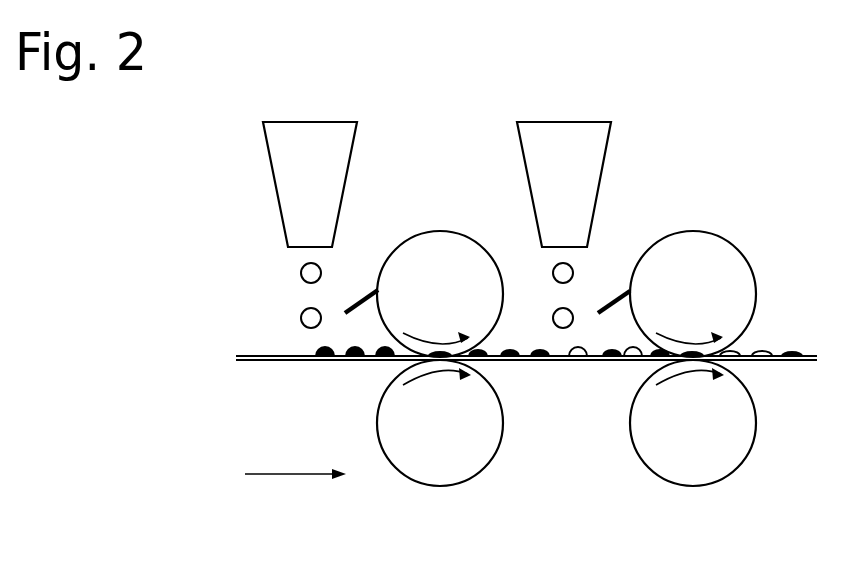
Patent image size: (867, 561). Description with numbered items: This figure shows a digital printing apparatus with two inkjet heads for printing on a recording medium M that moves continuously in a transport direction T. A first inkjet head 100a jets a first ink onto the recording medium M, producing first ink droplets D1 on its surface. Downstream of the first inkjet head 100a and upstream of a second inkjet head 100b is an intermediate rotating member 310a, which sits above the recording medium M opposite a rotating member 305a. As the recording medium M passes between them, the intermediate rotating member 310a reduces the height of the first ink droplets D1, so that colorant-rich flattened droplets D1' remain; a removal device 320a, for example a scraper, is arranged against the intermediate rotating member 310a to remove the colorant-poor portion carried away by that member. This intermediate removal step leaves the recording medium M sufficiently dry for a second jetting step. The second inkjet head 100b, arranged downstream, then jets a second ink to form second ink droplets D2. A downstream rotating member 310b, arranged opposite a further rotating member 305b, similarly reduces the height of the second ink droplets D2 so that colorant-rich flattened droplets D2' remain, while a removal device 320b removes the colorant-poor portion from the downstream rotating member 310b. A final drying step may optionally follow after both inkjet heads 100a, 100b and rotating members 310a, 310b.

The first inkjet head 100a is at (310, 138).
The second inkjet head 100b is at (562, 140).
The intermediate rotating member 310a is at (443, 245).
The downstream rotating member 310b is at (694, 245).
The removal device 320a is at (350, 305).
The removal device 320b is at (605, 305).
The opposite rotating member 305a is at (413, 465).
The opposite rotating member 305b is at (666, 463).
The recording medium M is at (260, 357).
The first ink droplets D1 is at (373, 380).
The colorant-rich flattened droplets D1' is at (644, 355).
The second ink droplets D2 is at (595, 380).
The colorant-rich flattened droplets D2' is at (764, 383).
The transport direction T is at (295, 459).